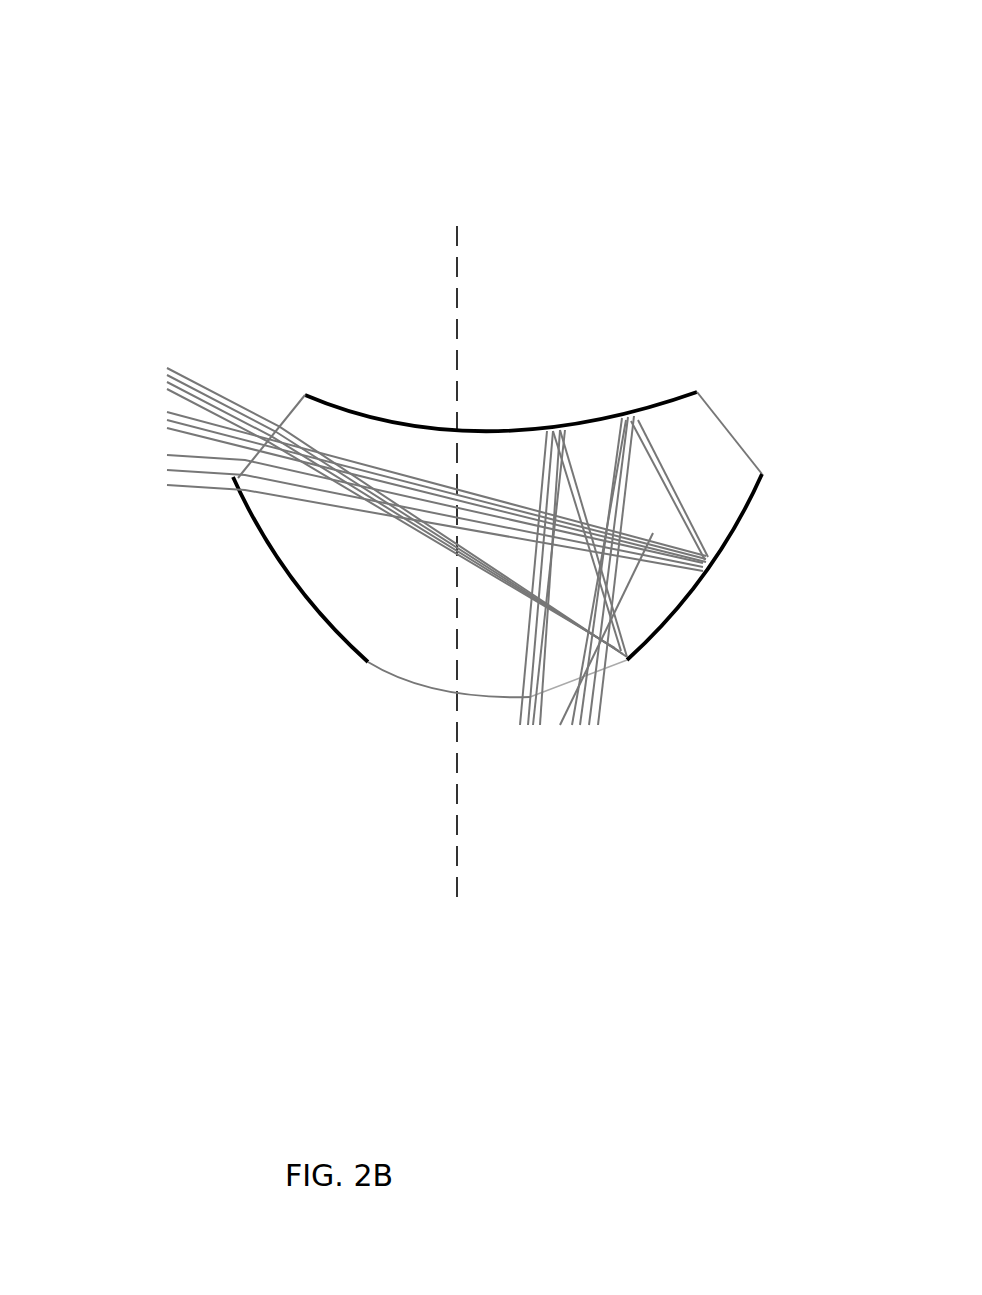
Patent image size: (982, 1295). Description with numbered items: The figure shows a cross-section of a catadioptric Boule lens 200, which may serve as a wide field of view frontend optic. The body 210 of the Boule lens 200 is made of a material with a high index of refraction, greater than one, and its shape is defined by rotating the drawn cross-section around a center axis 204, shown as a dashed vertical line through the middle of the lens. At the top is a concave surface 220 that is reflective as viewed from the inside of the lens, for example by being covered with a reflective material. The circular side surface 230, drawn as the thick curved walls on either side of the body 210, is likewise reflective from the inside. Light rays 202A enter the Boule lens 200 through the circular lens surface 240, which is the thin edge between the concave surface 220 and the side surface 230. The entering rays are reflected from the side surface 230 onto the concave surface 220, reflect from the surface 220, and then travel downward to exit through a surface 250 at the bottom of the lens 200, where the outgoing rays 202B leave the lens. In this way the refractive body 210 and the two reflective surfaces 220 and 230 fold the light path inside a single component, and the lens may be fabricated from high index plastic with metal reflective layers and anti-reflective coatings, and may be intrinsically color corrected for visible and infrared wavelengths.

The Boule lens 200 is at (418, 41).
The light rays 202A is at (165, 384).
The outgoing light rays 202B is at (550, 733).
The center axis 204 is at (478, 565).
The body 210 is at (356, 549).
The concave surface 220 is at (332, 400).
The circular side surface 230 is at (307, 602).
The lens surface 240 is at (284, 405).
The surface 250 is at (413, 686).